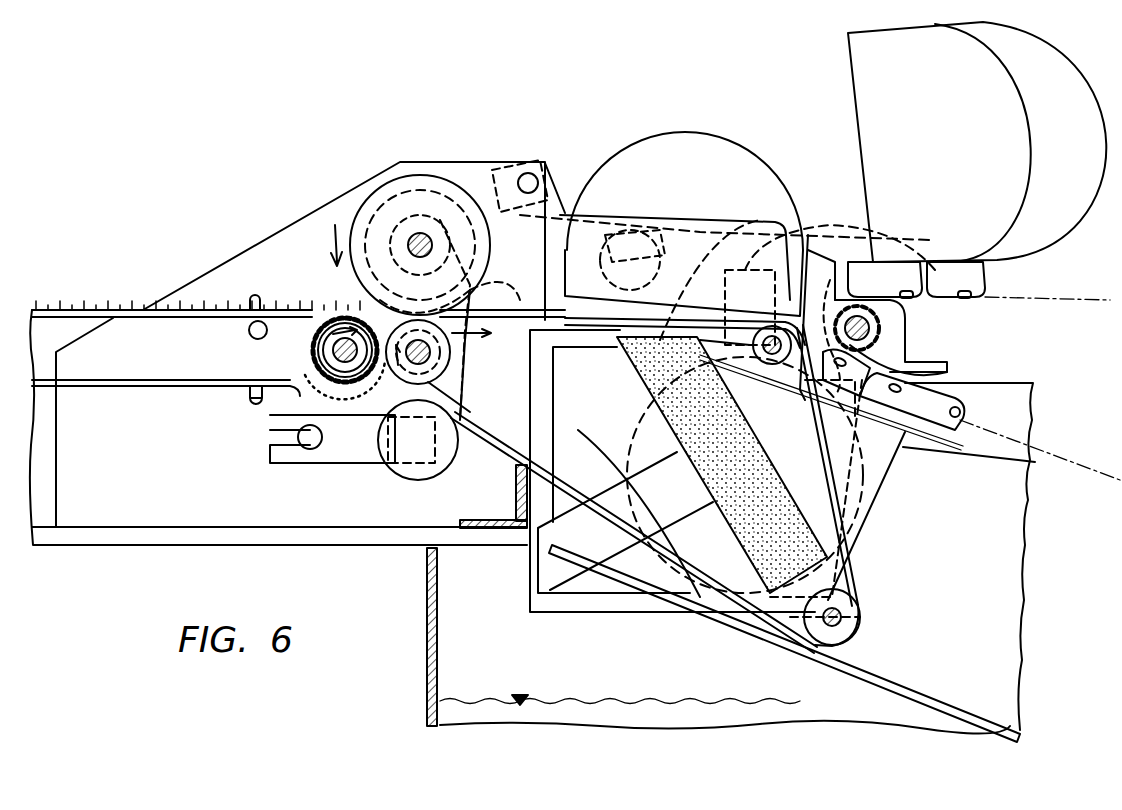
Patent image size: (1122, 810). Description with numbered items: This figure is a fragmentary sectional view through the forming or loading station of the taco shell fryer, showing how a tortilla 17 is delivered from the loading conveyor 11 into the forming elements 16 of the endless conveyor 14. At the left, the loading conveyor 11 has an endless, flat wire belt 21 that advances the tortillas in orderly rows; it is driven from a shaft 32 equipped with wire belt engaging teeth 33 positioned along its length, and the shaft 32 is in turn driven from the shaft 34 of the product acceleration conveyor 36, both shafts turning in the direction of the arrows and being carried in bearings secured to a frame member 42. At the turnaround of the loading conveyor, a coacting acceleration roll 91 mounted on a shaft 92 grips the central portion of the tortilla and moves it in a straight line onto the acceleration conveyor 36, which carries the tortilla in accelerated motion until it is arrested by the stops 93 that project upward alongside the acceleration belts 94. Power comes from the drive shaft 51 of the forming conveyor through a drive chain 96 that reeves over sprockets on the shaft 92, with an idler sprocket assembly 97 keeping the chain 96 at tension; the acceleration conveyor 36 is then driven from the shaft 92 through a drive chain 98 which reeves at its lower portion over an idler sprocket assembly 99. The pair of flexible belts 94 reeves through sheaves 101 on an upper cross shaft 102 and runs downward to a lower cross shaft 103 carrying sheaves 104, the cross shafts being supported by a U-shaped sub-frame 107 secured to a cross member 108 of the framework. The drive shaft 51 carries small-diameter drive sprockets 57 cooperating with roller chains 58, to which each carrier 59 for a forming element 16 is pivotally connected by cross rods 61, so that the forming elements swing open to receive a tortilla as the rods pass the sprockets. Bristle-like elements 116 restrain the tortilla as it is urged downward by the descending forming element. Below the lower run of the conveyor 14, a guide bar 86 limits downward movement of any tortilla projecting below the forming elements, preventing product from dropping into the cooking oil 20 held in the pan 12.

The loading conveyor 11 is at (52, 282).
The wire belt 21 is at (107, 305).
The frame member 42 is at (172, 472).
The lower acceleration roll 91 is at (435, 177).
The shaft 92 is at (418, 245).
The idler sprocket assembly 97 is at (632, 183).
The wire belt engaging teeth 33 is at (316, 343).
The shaft 32 is at (372, 382).
The shaft 34 is at (430, 362).
The idler sprocket assembly 99 is at (393, 470).
The drive chain 98 is at (470, 302).
The product acceleration conveyor 36 is at (470, 455).
The cross member 108 is at (490, 520).
The forming element 16 is at (748, 150).
The tortilla 17 is at (600, 315).
The drive chain 96 is at (812, 230).
The stops 93 is at (745, 266).
The upper cross shaft 102 is at (758, 351).
The sheaves 101 is at (816, 426).
The carrier 59 is at (815, 275).
The roller chain 58 is at (1047, 297).
The cross rod 61 is at (895, 314).
The drive shaft 51 is at (895, 344).
The drive sprocket 57 is at (947, 371).
The endless conveyor 14 is at (1045, 447).
The acceleration conveyor belts 94 is at (565, 488).
The bristle-like elements 116 is at (646, 392).
The U-shaped sub-frame 107 is at (527, 587).
The pan 12 is at (427, 606).
The cooking oil 20 is at (725, 693).
The sheaves 104 is at (855, 631).
The lower cross shaft 103 is at (840, 613).
The guide bar 86 is at (915, 693).